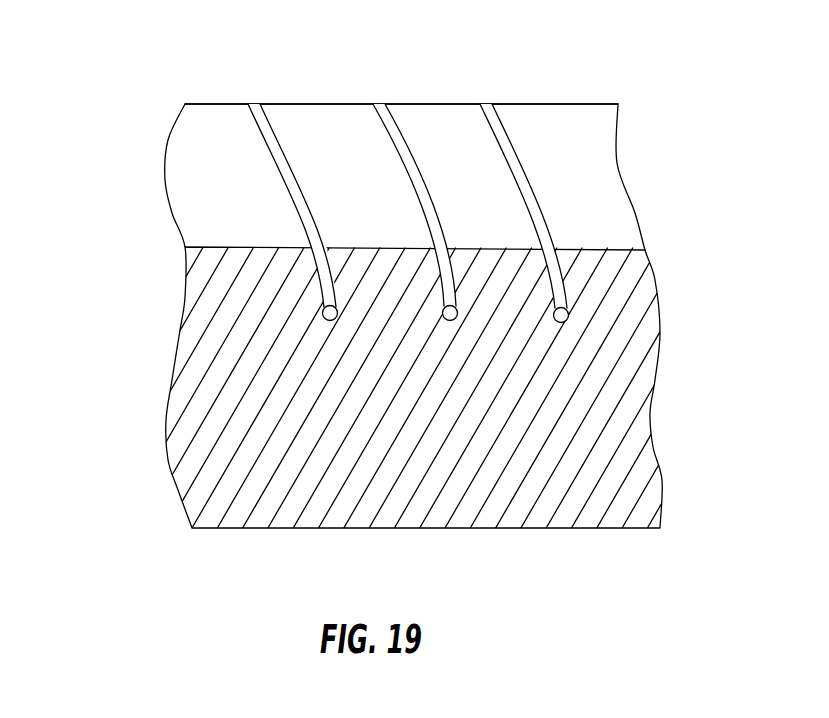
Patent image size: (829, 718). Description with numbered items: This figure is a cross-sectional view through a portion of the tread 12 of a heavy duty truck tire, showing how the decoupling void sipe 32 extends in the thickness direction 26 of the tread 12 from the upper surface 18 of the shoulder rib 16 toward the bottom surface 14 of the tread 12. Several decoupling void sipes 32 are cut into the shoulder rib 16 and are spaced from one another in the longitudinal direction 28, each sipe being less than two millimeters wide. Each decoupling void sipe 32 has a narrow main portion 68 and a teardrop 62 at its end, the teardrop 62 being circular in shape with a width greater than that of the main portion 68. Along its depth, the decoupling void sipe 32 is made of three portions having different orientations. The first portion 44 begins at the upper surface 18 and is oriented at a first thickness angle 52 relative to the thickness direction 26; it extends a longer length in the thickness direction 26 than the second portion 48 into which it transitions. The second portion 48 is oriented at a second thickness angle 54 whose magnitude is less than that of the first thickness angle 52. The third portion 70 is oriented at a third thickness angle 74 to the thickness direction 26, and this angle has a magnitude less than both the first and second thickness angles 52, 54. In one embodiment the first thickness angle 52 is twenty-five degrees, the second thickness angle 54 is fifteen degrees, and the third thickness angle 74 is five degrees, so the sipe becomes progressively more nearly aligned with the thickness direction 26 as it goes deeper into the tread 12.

The tread 12 is at (690, 65).
The bottom surface 14 is at (592, 530).
The shoulder rib 16 is at (602, 152).
The upper surface 18 is at (575, 104).
The thickness direction 26 is at (126, 323).
The longitudinal direction 28 is at (183, 550).
The decoupling void sipe 32 is at (560, 288).
The first portion 44 is at (270, 135).
The second portion 48 is at (335, 293).
The first thickness angle 52 is at (258, 137).
The second thickness angle 54 is at (302, 210).
The teardrop 62 is at (563, 322).
The main portion 68 is at (537, 215).
The third portion 70 is at (333, 319).
The third thickness angle 74 is at (315, 280).